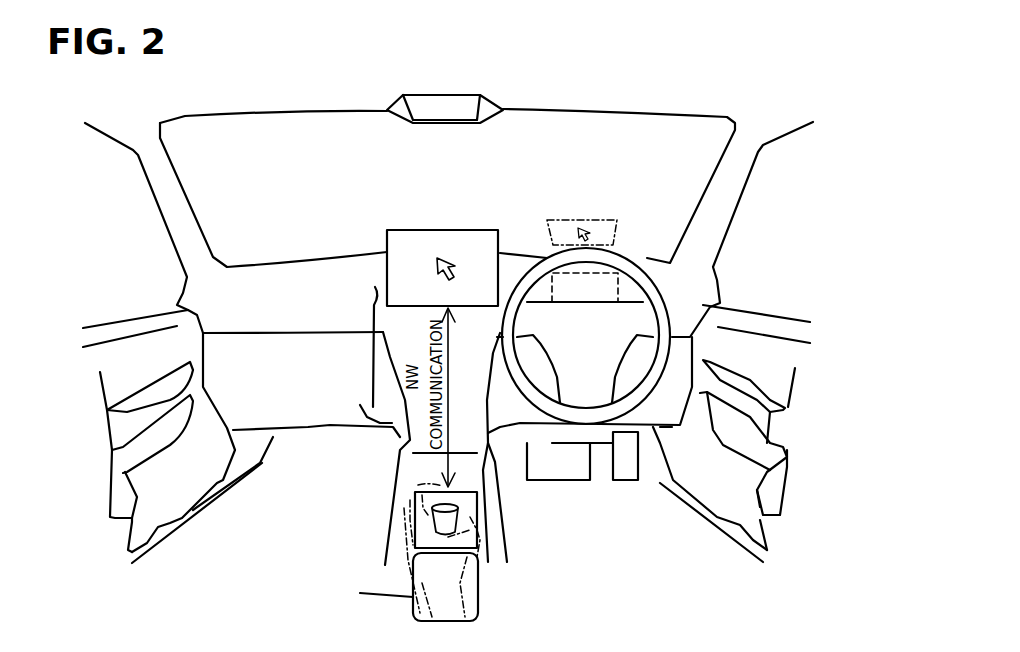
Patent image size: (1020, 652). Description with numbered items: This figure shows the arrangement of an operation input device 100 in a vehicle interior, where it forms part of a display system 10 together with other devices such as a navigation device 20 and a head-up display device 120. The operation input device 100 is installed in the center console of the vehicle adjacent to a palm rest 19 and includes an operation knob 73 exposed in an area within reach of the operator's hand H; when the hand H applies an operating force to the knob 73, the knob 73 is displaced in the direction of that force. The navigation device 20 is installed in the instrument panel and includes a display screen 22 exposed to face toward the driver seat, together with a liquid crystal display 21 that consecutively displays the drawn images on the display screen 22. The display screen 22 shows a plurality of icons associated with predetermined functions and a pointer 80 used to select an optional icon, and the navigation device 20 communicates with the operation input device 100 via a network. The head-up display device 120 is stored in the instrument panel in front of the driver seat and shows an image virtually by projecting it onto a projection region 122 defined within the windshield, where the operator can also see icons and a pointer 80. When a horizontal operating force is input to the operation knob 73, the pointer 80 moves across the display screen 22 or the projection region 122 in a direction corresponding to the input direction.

The display system 10 is at (322, 463).
The palm rest 19 is at (413, 598).
The navigation device 20 is at (373, 405).
The liquid crystal display 21 is at (460, 228).
The display screen 22 is at (408, 242).
The operation knob 73 is at (457, 508).
The pointer 80 is at (440, 257).
The operation input device 100 is at (421, 520).
The head-up display device 120 is at (618, 283).
The projection region 122 is at (560, 220).
The operator's hand H is at (473, 528).